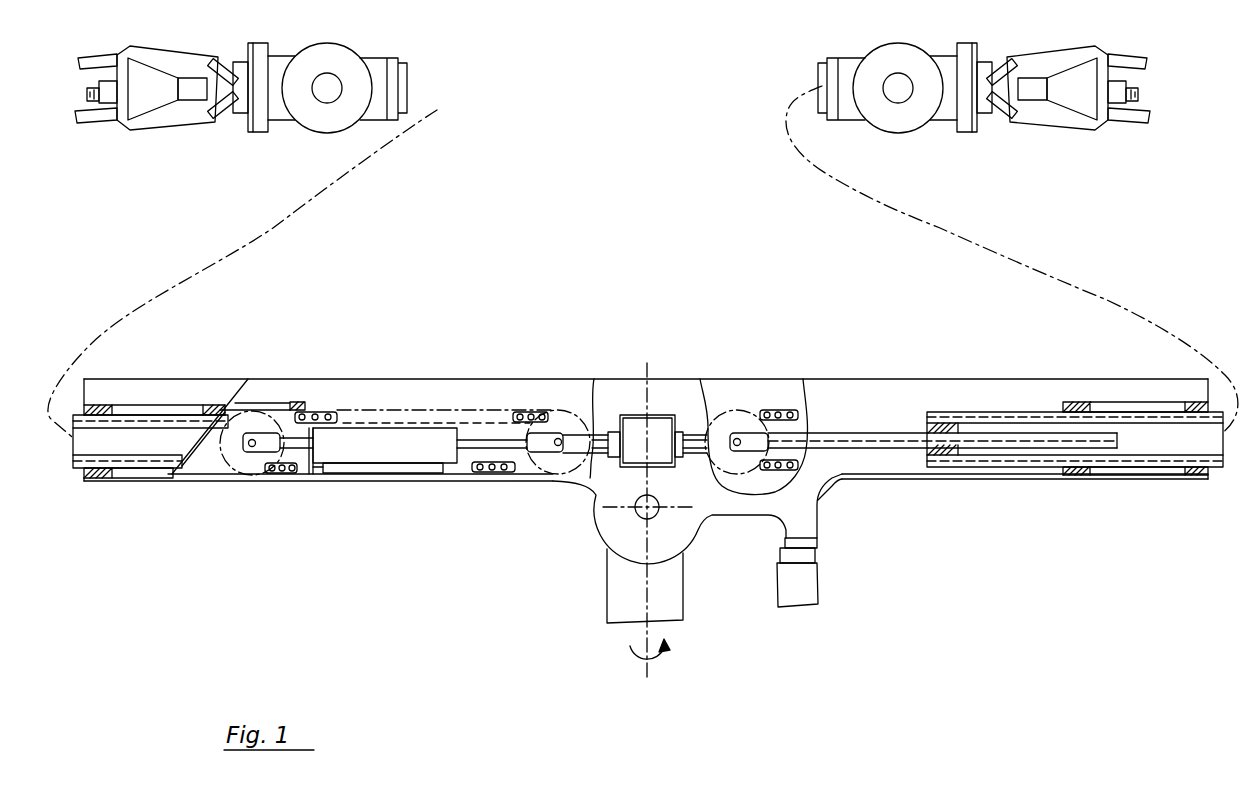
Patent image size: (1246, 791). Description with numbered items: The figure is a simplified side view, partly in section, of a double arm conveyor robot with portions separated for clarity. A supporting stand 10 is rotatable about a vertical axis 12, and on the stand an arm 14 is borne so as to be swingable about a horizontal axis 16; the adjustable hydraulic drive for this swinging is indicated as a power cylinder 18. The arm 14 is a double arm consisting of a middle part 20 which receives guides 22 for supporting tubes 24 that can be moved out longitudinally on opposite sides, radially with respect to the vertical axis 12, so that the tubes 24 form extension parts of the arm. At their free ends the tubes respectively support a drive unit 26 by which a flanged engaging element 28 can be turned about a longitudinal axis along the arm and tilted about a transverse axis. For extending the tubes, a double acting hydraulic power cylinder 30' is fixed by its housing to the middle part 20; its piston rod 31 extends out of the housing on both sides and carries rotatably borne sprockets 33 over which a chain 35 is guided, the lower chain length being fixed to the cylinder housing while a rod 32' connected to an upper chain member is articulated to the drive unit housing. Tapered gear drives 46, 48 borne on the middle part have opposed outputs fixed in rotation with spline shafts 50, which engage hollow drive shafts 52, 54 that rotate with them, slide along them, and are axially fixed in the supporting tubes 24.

The supporting stand 10 is at (628, 598).
The vertical axis 12 is at (650, 620).
The arm 14 is at (912, 463).
The horizontal axis 16 is at (638, 513).
The power cylinder 18 is at (800, 582).
The middle part 20 is at (757, 397).
The guides 22 is at (219, 410).
The supporting tubes 24 is at (395, 80).
The drive unit 26 is at (283, 115).
The flanged engaging element 28 is at (185, 113).
The double acting hydraulic power cylinder 30' is at (416, 486).
The piston rod 31 is at (308, 477).
The rod 32' is at (300, 360).
The sprockets 33 is at (243, 462).
The chain 35 is at (520, 412).
The tapered gear drive 46 is at (657, 428).
The tapered gear drive 48 is at (635, 444).
The spline shafts 50 is at (839, 438).
The hollow drive shaft 52 is at (138, 457).
The hollow drive shaft 54 is at (1013, 423).